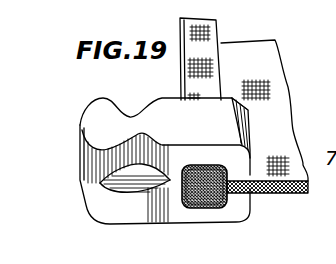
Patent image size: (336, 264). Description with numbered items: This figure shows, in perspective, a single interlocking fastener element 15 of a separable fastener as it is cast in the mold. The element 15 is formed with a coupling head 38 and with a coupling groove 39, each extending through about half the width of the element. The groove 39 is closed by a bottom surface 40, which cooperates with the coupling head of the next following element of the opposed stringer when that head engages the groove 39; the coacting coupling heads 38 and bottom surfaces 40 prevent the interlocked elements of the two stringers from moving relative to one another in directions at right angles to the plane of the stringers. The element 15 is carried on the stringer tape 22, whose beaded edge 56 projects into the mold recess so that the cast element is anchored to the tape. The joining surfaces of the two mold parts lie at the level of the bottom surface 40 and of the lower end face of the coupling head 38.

The interlocking fastener element 15 is at (245, 110).
The stringer tape 22 is at (297, 139).
The coupling head 38 is at (83, 118).
The coupling groove 39 is at (138, 137).
The bottom surface 40 is at (132, 187).
The beaded edge 56 is at (228, 201).